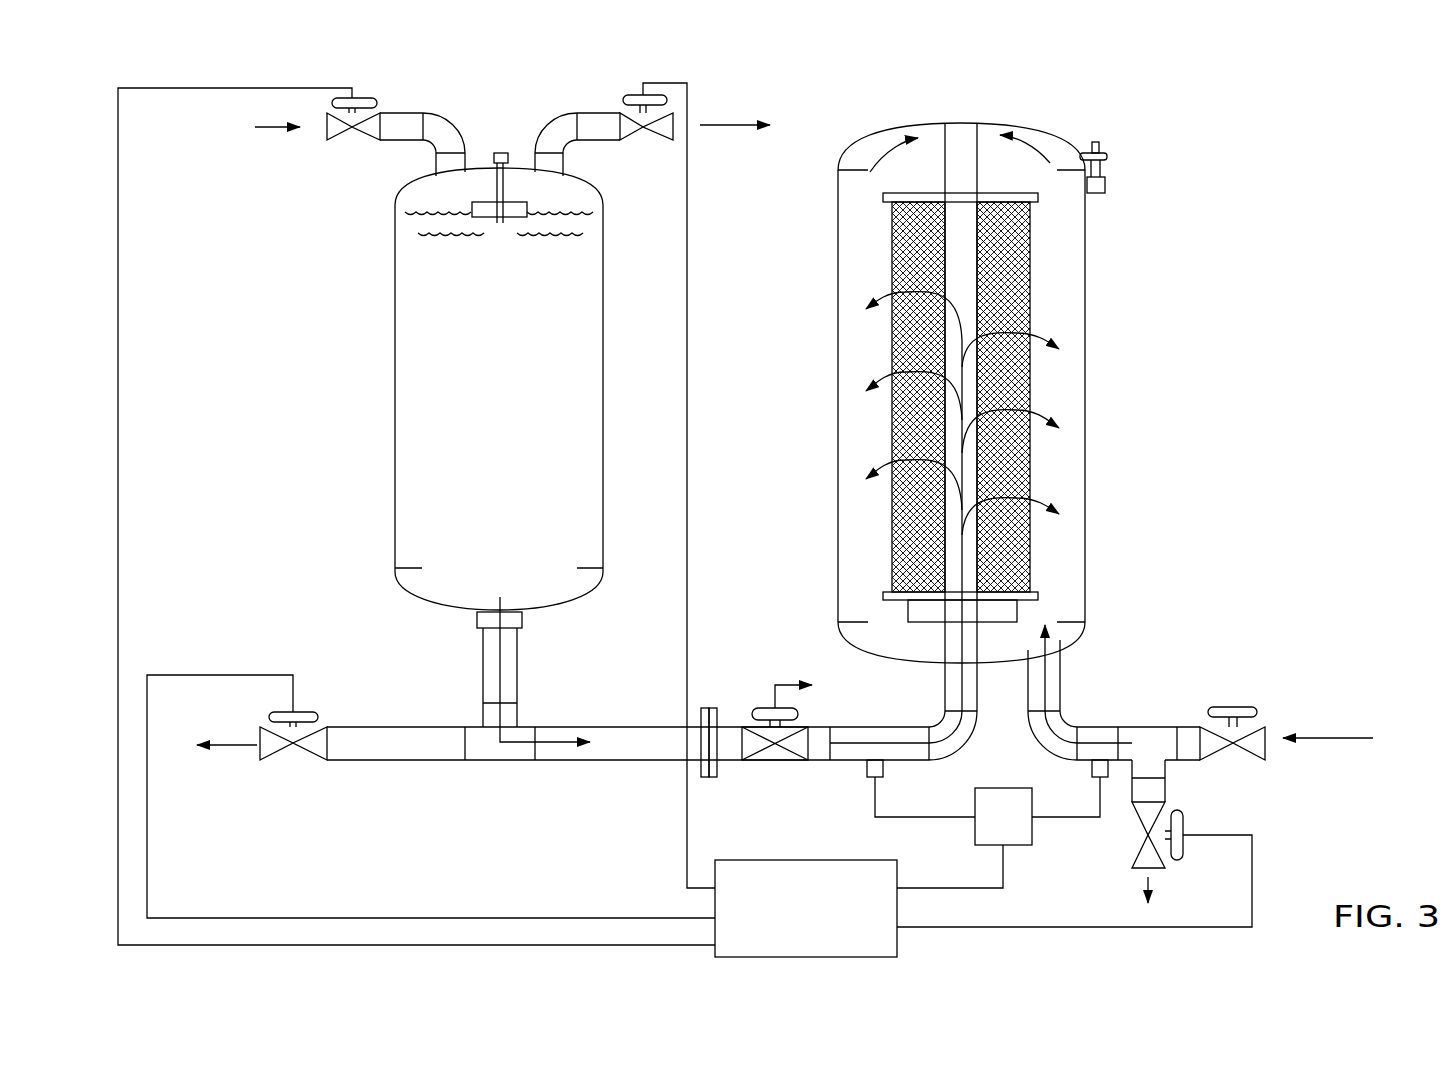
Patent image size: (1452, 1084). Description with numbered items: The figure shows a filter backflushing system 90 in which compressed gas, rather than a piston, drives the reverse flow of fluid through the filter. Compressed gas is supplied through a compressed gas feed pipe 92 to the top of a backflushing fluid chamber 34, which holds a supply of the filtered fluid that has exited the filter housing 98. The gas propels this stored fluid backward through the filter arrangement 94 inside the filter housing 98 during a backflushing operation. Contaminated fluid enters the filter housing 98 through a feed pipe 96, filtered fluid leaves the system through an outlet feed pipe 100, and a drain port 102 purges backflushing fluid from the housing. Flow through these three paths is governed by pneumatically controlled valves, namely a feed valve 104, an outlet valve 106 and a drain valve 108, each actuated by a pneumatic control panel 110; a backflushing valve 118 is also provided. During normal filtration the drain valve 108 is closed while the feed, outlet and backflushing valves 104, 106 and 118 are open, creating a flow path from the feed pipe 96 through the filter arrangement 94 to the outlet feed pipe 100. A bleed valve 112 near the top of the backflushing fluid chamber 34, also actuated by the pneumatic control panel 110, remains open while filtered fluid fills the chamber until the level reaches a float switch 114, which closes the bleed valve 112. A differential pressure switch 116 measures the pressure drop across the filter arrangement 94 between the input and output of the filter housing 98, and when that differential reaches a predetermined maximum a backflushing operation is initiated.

The backflushing fluid chamber 34 is at (395, 333).
The filter backflushing system 90 is at (1296, 223).
The compressed gas feed pipe 92 is at (397, 142).
The filter arrangement 94 is at (1023, 295).
The feed pipe 96 is at (1188, 732).
The filter housing 98 is at (838, 350).
The outlet feed pipe 100 is at (410, 740).
The drain port 102 is at (1157, 787).
The feed valve 104 is at (1257, 738).
The outlet valve 106 is at (293, 762).
The drain valve 108 is at (1143, 838).
The pneumatic control panel 110 is at (730, 883).
The bleed valve 112 is at (643, 130).
The float switch 114 is at (510, 218).
The differential pressure switch 116 is at (1022, 832).
The backflushing valve 118 is at (765, 707).